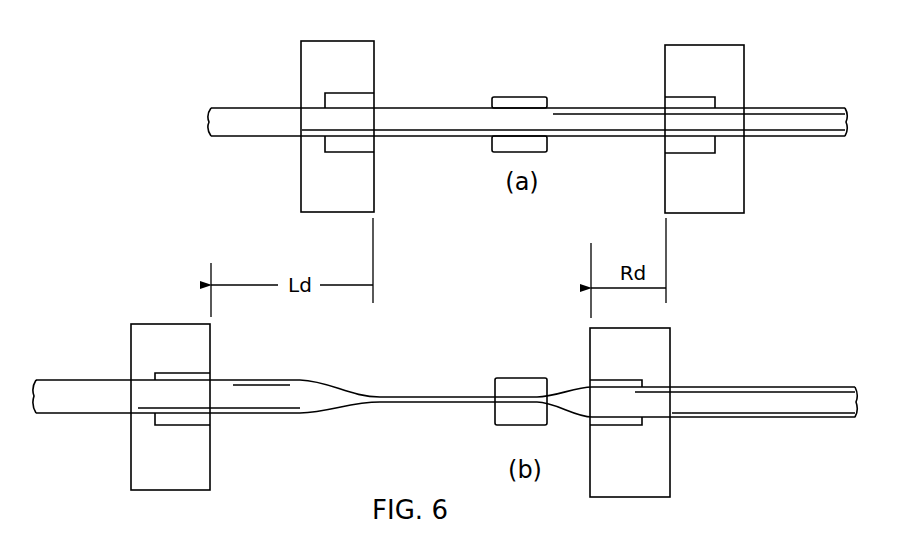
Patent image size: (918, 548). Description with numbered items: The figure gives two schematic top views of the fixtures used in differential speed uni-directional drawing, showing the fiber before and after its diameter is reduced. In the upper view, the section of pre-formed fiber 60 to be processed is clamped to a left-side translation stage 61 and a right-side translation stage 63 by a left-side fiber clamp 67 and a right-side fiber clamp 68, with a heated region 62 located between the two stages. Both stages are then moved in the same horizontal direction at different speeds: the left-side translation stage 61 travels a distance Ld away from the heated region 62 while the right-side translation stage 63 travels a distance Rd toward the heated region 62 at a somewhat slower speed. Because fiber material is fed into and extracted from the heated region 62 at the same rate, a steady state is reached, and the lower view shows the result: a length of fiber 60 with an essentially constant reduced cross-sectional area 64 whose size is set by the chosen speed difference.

In FIG. 6a, the fiber 60 is at (248, 107).
In FIG. 6b, the fiber 60 is at (92, 388).
In FIG. 6a, the left-side translation stage 61 is at (352, 53).
In FIG. 6a, the heated region 62 is at (528, 100).
In FIG. 6b, the heated region 62 is at (505, 385).
In FIG. 6a, the right-side translation stage 63 is at (734, 62).
In FIG. 6b, the reduced cross-sectional area 64 is at (437, 405).
In FIG. 6a, the left-side fiber clamp 67 is at (330, 143).
In FIG. 6a, the right-side fiber clamp 68 is at (708, 150).